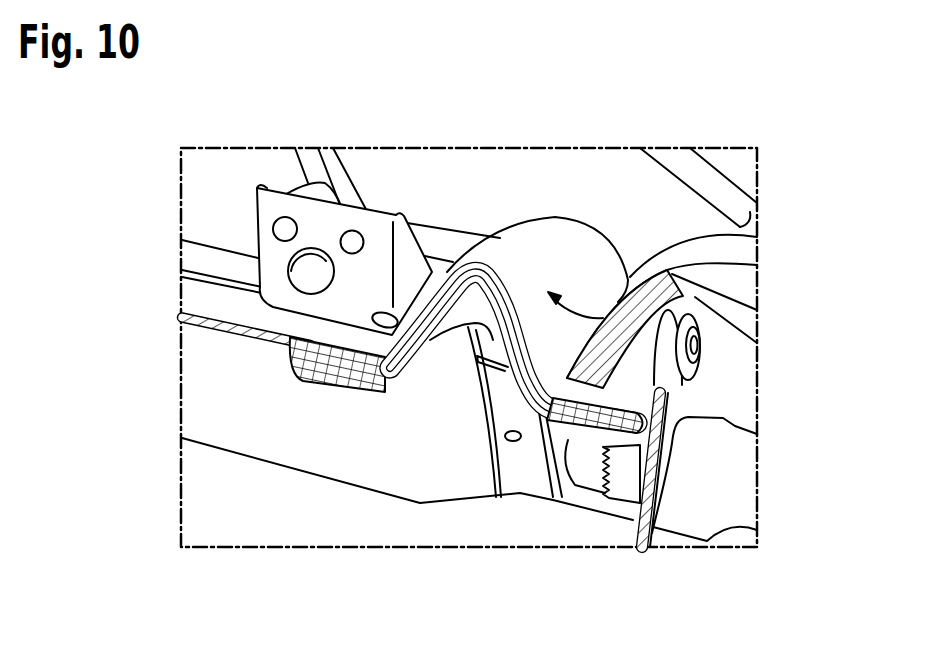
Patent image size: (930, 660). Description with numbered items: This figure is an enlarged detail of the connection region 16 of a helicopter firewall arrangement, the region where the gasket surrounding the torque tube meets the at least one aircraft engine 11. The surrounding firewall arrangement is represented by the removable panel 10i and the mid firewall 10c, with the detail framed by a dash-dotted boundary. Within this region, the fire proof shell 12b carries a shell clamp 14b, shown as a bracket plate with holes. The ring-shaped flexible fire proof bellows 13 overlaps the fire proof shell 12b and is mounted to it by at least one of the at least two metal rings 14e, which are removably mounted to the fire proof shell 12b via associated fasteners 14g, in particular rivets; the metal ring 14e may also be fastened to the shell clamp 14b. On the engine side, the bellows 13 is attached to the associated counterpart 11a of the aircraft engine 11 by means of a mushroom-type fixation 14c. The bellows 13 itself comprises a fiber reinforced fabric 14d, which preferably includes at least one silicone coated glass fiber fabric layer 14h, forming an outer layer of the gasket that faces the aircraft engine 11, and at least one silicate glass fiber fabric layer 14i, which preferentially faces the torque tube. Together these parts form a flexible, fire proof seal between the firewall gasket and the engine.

The connection region 16 is at (178, 134).
The aircraft engine 11 is at (742, 553).
The counterpart 11a is at (723, 402).
The removable panel 10i is at (262, 172).
The mid firewall 10c is at (452, 185).
The fire proof shell 12b is at (217, 361).
The shell clamp 14b is at (260, 223).
The ring-shaped flexible fire proof bellows 13 is at (543, 213).
The fiber reinforced fabric 14d is at (573, 258).
The silicate glass fiber fabric layer 14i is at (511, 384).
The fasteners 14g is at (513, 443).
The metal rings 14e is at (330, 386).
The silicone coated glass fiber fabric layer 14h is at (735, 263).
The mushroom-type fixation 14c is at (705, 352).